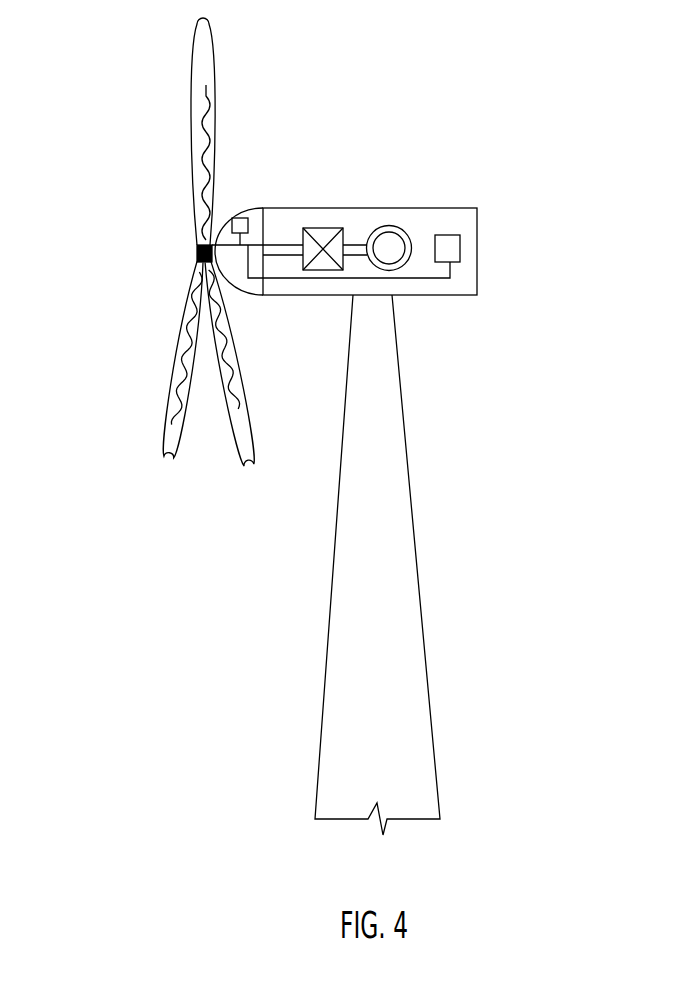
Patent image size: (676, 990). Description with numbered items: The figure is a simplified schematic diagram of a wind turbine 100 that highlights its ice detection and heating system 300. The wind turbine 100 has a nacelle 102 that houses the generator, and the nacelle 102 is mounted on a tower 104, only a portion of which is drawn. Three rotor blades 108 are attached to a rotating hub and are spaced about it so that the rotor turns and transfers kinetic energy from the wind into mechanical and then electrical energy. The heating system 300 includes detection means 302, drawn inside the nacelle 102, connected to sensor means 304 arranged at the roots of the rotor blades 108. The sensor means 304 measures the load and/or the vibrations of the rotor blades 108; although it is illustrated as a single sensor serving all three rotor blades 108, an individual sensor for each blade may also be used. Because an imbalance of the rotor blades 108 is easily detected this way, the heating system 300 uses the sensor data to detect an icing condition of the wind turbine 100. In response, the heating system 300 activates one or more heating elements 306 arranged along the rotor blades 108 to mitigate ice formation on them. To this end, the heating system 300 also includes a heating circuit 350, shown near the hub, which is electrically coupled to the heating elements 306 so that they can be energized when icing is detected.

The wind turbine 100 is at (148, 105).
The nacelle 102 is at (477, 225).
The tower 104 is at (405, 435).
The rotor blades 108 is at (197, 255).
The ice detection and heating system 300 is at (125, 269).
The detection means 302 is at (450, 235).
The sensor means 304 is at (195, 258).
The heating elements 306 is at (212, 107).
The heating circuit 350 is at (240, 212).